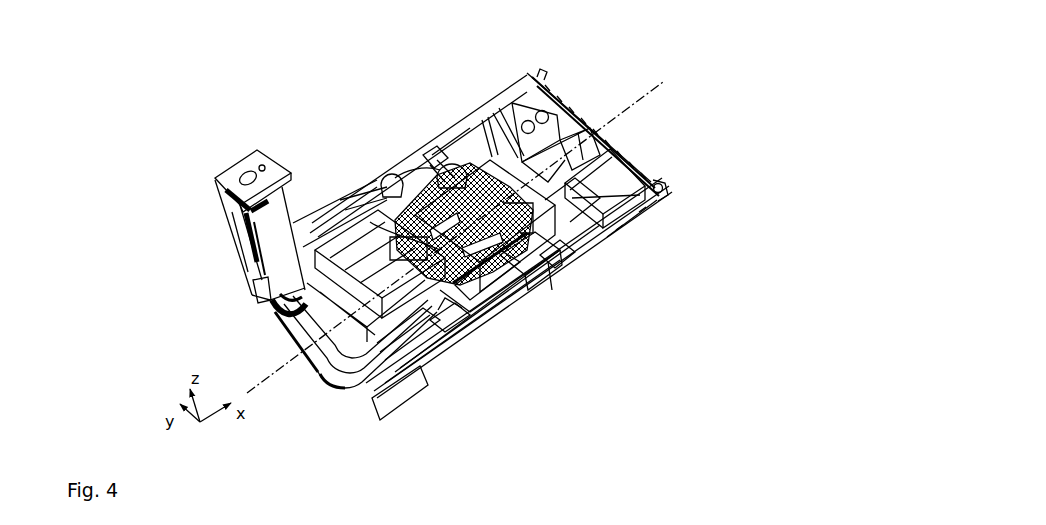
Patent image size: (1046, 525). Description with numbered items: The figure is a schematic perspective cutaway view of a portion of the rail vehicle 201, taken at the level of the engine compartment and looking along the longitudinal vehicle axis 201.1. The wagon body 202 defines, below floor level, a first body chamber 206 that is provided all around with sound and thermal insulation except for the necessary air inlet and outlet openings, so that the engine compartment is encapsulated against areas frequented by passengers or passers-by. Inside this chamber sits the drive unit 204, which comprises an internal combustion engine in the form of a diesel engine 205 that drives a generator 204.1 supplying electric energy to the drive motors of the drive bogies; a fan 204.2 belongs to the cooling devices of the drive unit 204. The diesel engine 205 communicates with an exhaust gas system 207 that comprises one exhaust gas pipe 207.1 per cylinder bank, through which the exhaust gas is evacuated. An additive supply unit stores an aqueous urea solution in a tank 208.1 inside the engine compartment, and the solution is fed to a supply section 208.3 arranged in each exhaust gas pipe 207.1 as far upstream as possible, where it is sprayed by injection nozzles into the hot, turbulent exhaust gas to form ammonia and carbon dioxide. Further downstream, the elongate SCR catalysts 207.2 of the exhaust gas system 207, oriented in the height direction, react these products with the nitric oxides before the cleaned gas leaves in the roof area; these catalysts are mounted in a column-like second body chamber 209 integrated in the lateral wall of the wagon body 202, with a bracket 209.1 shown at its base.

The rail vehicle 201 is at (593, 58).
The longitudinal vehicle axis 201.1 is at (665, 83).
The wagon body 202 is at (466, 120).
The drive unit 204 is at (482, 315).
The generator 204.1 is at (380, 307).
The fan 204.2 is at (431, 340).
The diesel engine 205 is at (541, 253).
The first body chamber 206 is at (390, 190).
The exhaust gas system 207 is at (313, 373).
The exhaust gas pipe 207.1 is at (367, 222).
The SCR catalyst 207.2 is at (245, 240).
The tank 208.1 is at (525, 105).
The supply section 208.3 is at (432, 158).
The second body chamber 209 is at (233, 205).
The stack bracket 209.1 is at (253, 283).